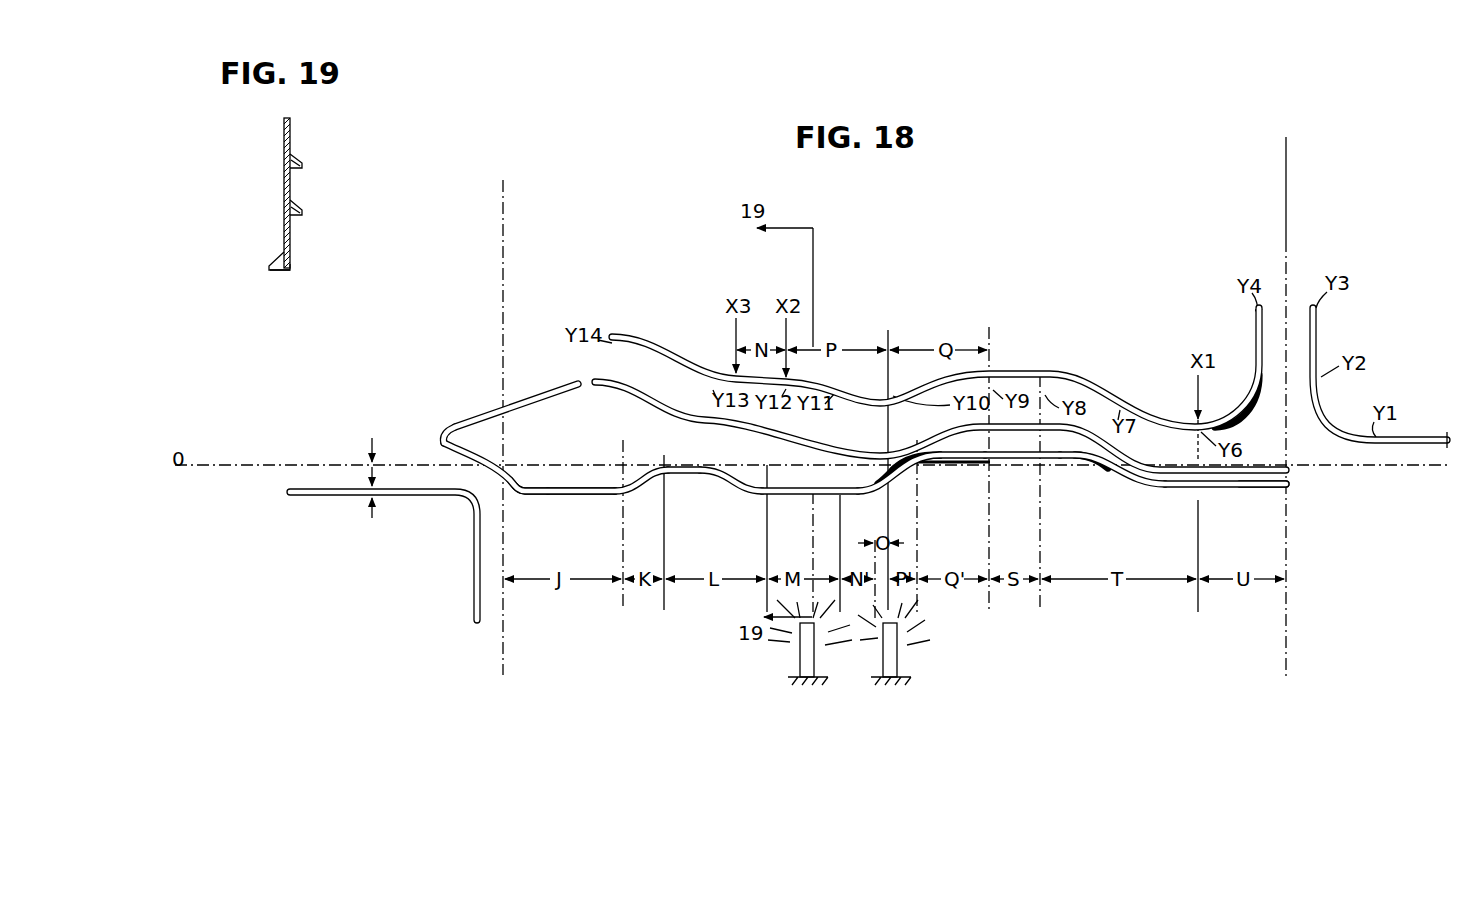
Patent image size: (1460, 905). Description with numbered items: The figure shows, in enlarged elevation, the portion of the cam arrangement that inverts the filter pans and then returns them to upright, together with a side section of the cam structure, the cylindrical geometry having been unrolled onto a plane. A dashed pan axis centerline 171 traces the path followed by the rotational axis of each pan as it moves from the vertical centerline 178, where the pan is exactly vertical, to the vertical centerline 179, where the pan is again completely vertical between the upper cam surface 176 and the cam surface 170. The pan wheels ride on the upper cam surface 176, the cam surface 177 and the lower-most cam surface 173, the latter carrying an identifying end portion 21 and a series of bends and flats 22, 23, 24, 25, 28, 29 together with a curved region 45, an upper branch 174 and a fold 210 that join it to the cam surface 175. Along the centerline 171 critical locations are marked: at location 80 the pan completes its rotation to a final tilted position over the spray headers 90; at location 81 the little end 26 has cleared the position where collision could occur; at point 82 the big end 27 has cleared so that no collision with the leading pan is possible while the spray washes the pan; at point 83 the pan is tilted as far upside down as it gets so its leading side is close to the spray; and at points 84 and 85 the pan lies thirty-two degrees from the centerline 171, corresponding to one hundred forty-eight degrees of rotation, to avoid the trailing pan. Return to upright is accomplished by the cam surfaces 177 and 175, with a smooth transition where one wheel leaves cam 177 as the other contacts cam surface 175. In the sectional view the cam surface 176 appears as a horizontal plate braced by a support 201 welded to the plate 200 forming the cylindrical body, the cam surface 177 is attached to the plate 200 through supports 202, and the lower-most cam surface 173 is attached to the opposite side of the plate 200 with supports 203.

In FIG. 18, the end portion of strip 21 is at (1289, 488).
In FIG. 18, the bend 22 is at (1160, 491).
In FIG. 18, the bend 23 is at (1079, 459).
In FIG. 18, the flat portion 24 is at (1004, 458).
In FIG. 18, the bend 25 is at (916, 459).
In FIG. 18, the little end 26 is at (857, 495).
In FIG. 18, the big end 27 is at (777, 495).
In FIG. 18, the flat portion 28 is at (605, 497).
In FIG. 18, the bend 29 is at (522, 497).
In FIG. 18, the curved portion 45 is at (1254, 382).
In FIG. 18, the location along pan axis centerline 80 is at (932, 466).
In FIG. 18, the location along pan axis centerline 81 is at (880, 474).
In FIG. 18, the point along pan axis centerline 82 is at (870, 465).
In FIG. 18, the point along pan axis centerline 83 is at (770, 466).
In FIG. 18, the point along pan axis centerline 84 is at (664, 462).
In FIG. 18, the point along pan axis centerline 85 is at (623, 461).
In FIG. 18, the spray headers 90 is at (882, 652).
In FIG. 18, the cam surface 170 is at (1413, 449).
In FIG. 18, the pan axis centerline 171 is at (245, 462).
In FIG. 19, the lower-most cam surface 173 is at (276, 274).
In FIG. 18, the lower-most cam surface 173 is at (472, 458).
In FIG. 18, the upper branch 174 is at (487, 407).
In FIG. 18, the cam surface 175 is at (351, 482).
In FIG. 19, the upper cam surface 176 is at (304, 172).
In FIG. 18, the upper cam surface 176 is at (866, 401).
In FIG. 19, the cam surface 177 is at (303, 209).
In FIG. 18, the cam surface 177 is at (616, 389).
In FIG. 18, the vertical centerline 178 is at (505, 270).
In FIG. 18, the vertical centerline 179 is at (1289, 168).
In FIG. 19, the plate 200 is at (284, 124).
In FIG. 19, the support 201 is at (298, 157).
In FIG. 19, the supports 202 is at (297, 219).
In FIG. 19, the supports 203 is at (272, 262).
In FIG. 18, the fold 210 is at (442, 440).